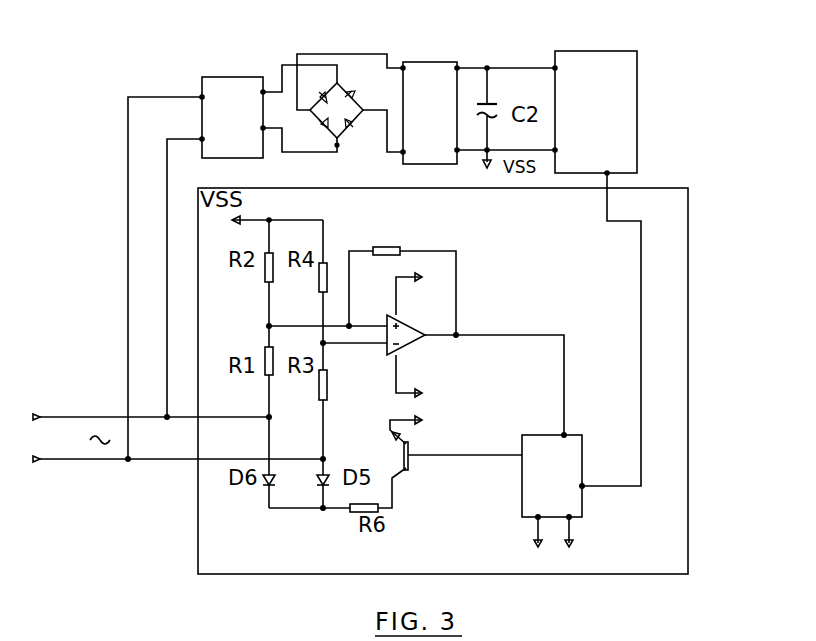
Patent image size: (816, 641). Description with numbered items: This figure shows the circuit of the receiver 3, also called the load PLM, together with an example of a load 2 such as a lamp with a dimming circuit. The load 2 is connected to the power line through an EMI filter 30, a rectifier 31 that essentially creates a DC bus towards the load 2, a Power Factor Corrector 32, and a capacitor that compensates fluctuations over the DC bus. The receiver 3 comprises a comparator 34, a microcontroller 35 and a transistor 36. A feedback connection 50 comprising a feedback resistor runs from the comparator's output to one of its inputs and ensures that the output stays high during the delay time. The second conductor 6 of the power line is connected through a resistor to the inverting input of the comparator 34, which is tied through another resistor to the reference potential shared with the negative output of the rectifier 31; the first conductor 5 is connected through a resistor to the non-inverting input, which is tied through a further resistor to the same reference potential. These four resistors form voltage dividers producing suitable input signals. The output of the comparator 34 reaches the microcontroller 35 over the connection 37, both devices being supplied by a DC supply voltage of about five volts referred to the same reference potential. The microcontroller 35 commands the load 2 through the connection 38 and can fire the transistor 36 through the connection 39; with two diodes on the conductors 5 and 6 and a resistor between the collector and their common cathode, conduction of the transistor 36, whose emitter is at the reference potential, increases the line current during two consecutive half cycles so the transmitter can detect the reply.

The load 2 is at (623, 132).
The receiver 3 is at (653, 553).
The first conductor 5 is at (75, 413).
The second conductor 6 is at (87, 461).
The EMI filter 30 is at (225, 83).
The rectifier 31 is at (358, 63).
The Power Factor Corrector 32 is at (435, 77).
The comparator 34 is at (387, 353).
The microcontroller 35 is at (572, 460).
The transistor 36 is at (395, 455).
The connection 37 is at (552, 330).
The connection 38 is at (677, 370).
The connection 39 is at (457, 456).
The feedback connection 50 is at (410, 245).